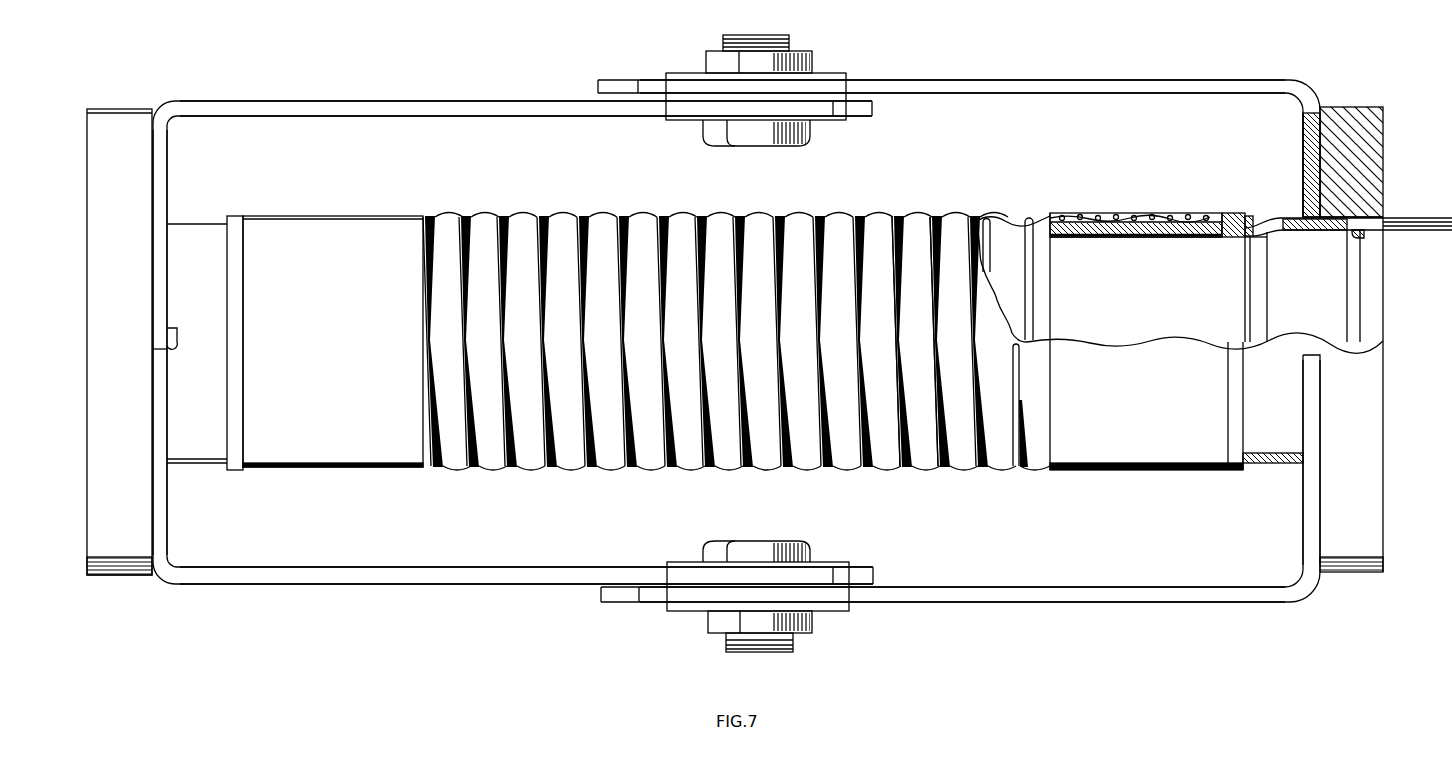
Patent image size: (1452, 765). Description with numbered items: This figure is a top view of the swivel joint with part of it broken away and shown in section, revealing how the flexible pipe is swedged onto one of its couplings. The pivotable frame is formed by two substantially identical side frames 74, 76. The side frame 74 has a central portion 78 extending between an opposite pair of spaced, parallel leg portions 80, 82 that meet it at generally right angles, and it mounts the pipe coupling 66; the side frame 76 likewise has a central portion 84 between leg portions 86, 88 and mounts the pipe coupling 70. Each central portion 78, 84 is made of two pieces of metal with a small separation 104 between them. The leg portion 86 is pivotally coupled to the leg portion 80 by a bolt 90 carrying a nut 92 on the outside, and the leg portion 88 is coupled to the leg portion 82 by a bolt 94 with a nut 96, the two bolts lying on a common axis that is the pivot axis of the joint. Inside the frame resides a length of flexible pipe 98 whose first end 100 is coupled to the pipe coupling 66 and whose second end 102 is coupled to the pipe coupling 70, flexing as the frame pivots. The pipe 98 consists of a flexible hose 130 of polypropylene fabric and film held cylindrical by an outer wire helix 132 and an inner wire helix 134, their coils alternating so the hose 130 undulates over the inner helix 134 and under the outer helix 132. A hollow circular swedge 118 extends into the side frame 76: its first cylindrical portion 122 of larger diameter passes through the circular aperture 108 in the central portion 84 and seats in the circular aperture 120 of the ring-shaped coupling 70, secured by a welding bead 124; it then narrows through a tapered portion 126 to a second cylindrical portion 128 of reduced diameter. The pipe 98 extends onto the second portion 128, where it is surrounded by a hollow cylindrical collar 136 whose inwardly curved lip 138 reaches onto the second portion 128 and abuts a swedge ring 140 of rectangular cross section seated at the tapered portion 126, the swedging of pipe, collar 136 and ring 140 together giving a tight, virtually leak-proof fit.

The pipe coupling 66 is at (122, 552).
The pipe coupling 70 is at (1355, 557).
The side frame 74 is at (494, 584).
The side frame 76 is at (1017, 603).
The central portion 78 is at (165, 180).
The leg portion 80 is at (388, 580).
The leg portion 82 is at (432, 78).
The central portion 84 is at (1303, 506).
The leg portion 86 is at (1110, 597).
The leg portion 88 is at (1158, 79).
The bolt 90 is at (806, 556).
The nut 92 is at (808, 632).
The bolt 94 is at (801, 136).
The nut 96 is at (812, 56).
The length of flexible pipe 98 is at (593, 217).
The first end 100 is at (356, 443).
The second end 102 is at (1160, 455).
The separation 104 is at (175, 332).
The circular aperture 108 is at (1304, 216).
The swedge 118 is at (1275, 217).
The circular aperture 120 is at (1386, 225).
The first generally cylindrical portion 122 is at (1292, 231).
The welding bead 124 is at (1364, 238).
The tapered portion 126 is at (1258, 237).
The second generally cylindrical portion 128 is at (1141, 238).
The flexible hose 130 is at (912, 225).
The outer wire helix 132 is at (975, 427).
The inner wire helix 134 is at (1034, 303).
The collar 136 is at (1130, 212).
The lip 138 is at (1223, 212).
The swedge ring 140 is at (1242, 212).